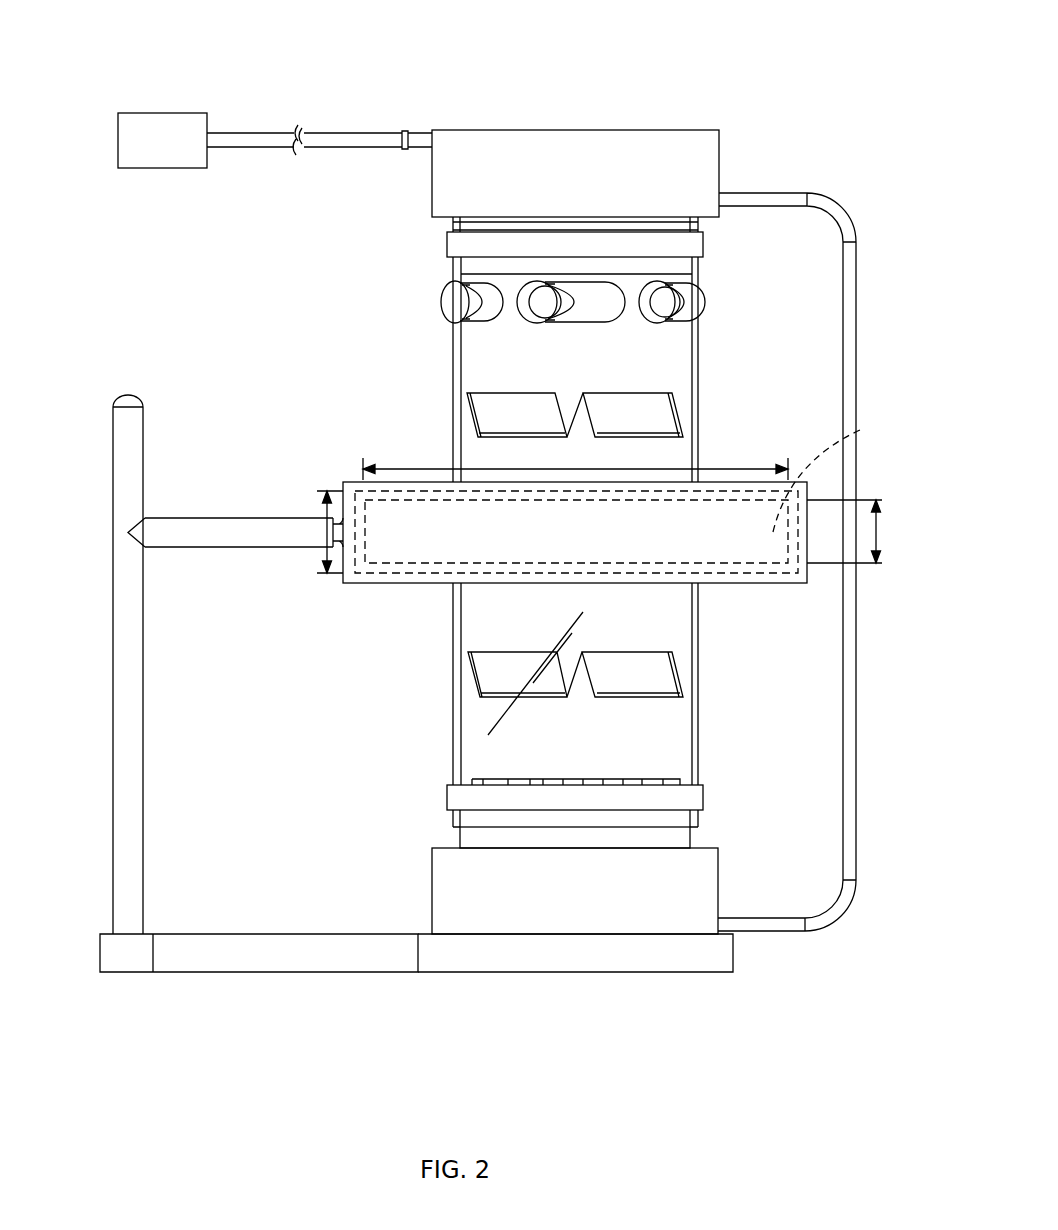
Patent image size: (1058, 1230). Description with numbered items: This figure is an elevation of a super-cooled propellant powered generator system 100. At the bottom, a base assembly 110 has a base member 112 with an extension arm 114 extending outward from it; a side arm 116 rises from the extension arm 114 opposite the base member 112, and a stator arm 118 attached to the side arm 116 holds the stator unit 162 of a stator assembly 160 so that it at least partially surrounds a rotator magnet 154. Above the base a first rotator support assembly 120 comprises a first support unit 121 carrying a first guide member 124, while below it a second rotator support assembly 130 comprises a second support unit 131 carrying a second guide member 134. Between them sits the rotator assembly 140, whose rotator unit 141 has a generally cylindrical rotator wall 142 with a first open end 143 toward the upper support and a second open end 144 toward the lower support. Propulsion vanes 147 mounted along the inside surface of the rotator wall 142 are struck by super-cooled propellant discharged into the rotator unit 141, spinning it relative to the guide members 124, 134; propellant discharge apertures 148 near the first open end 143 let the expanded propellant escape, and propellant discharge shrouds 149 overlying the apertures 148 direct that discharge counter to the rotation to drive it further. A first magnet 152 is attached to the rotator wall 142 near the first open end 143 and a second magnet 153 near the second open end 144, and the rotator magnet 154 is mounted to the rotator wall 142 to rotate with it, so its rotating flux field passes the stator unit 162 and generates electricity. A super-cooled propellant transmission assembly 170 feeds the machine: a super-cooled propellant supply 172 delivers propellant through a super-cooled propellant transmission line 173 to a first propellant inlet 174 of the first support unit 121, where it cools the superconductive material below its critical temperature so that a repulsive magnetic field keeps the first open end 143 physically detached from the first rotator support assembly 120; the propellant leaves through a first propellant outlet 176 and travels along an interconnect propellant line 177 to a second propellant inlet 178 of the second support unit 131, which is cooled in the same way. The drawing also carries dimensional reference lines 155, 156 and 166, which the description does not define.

The super-cooled propellant powered generator system 100 is at (790, 55).
The base assembly 110 is at (650, 995).
The base member 112 is at (500, 972).
The extension arm 114 is at (270, 972).
The side arm 116 is at (113, 735).
The stator arm 118 is at (208, 547).
The first rotator support assembly 120 is at (550, 113).
The first support unit 121 is at (657, 130).
The first guide member 124 is at (700, 263).
The second rotator support assembly 130 is at (400, 910).
The second support unit 131 is at (430, 918).
The second guide member 134 is at (690, 843).
The rotator assembly 140 is at (724, 688).
The rotator unit 141 is at (700, 447).
The rotator wall 142 is at (693, 358).
The first open end 143 is at (455, 226).
The second open end 144 is at (522, 827).
The propulsion vane 147 is at (633, 695).
The propellant discharge aperture 148 is at (557, 472).
The propellant discharge shroud 149 is at (575, 308).
The first magnet 152 is at (447, 243).
The second magnet 153 is at (447, 795).
The rotator magnet 154 is at (860, 430).
The carriage width 155 is at (405, 467).
The carriage height 156 is at (878, 535).
The stator assembly 160 is at (341, 614).
The stator unit 162 is at (430, 583).
The arm thickness 166 is at (325, 520).
The super-cooled propellant transmission assembly 170 is at (868, 350).
The super-cooled propellant supply 172 is at (886, 152).
The super-cooled propellant transmission line 173 is at (230, 133).
The first propellant inlet 174 is at (413, 137).
The first propellant outlet 176 is at (719, 193).
The interconnect propellant line 177 is at (855, 683).
The second propellant inlet 178 is at (718, 918).